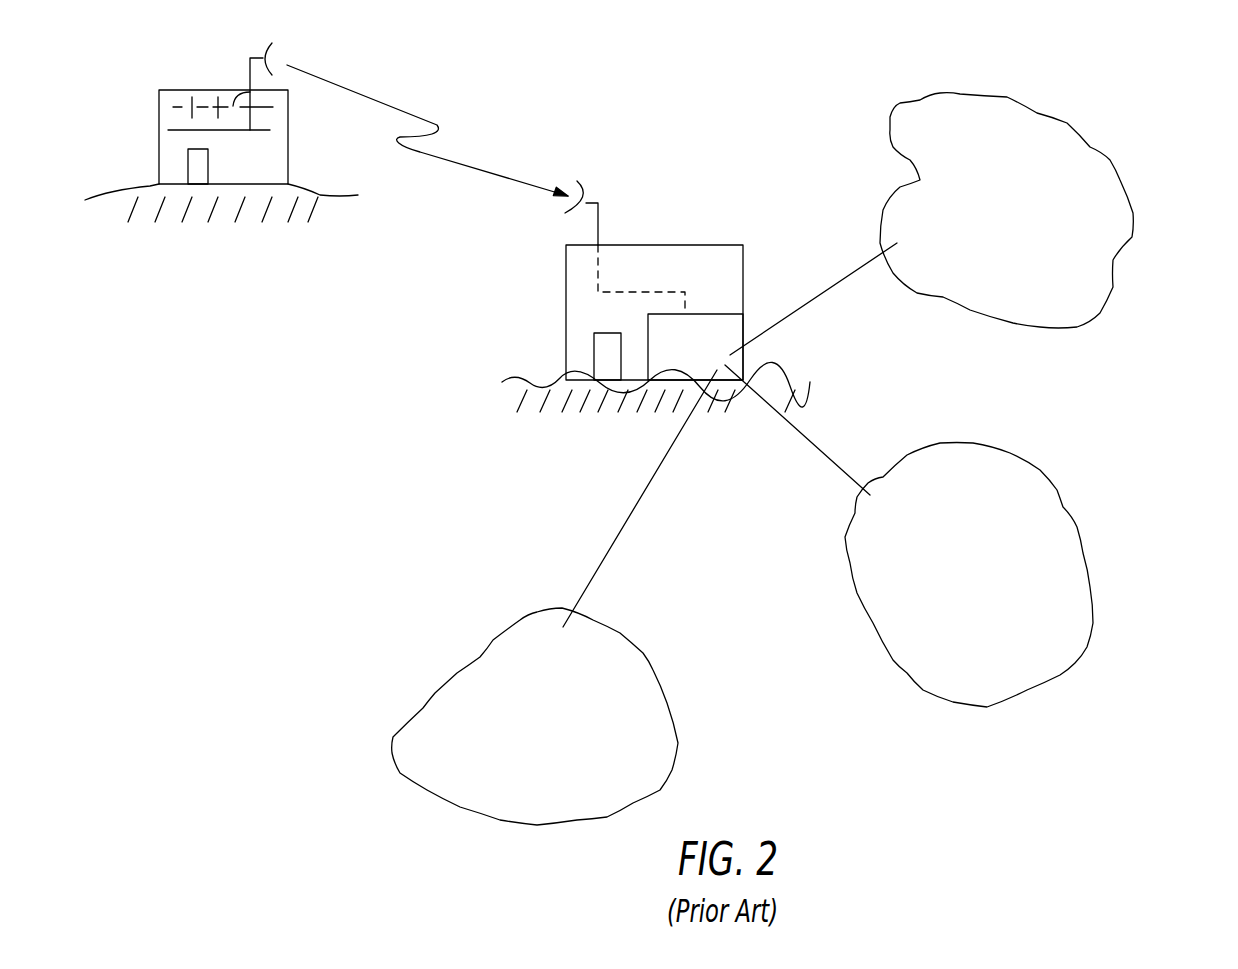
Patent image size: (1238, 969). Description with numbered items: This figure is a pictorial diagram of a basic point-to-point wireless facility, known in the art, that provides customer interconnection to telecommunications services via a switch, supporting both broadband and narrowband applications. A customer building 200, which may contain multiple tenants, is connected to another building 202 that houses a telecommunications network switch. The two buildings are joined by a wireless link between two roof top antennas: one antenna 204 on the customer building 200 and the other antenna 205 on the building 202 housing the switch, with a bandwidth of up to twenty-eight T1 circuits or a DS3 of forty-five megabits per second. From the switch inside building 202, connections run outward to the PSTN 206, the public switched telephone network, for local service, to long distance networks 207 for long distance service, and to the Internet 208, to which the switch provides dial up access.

The customer building 200 is at (159, 136).
The antenna 204 is at (272, 44).
The building 202 is at (540, 323).
The antenna 205 is at (587, 188).
The PSTN 206 is at (1063, 507).
The long distance networks 207 is at (652, 670).
The Internet 208 is at (1113, 162).